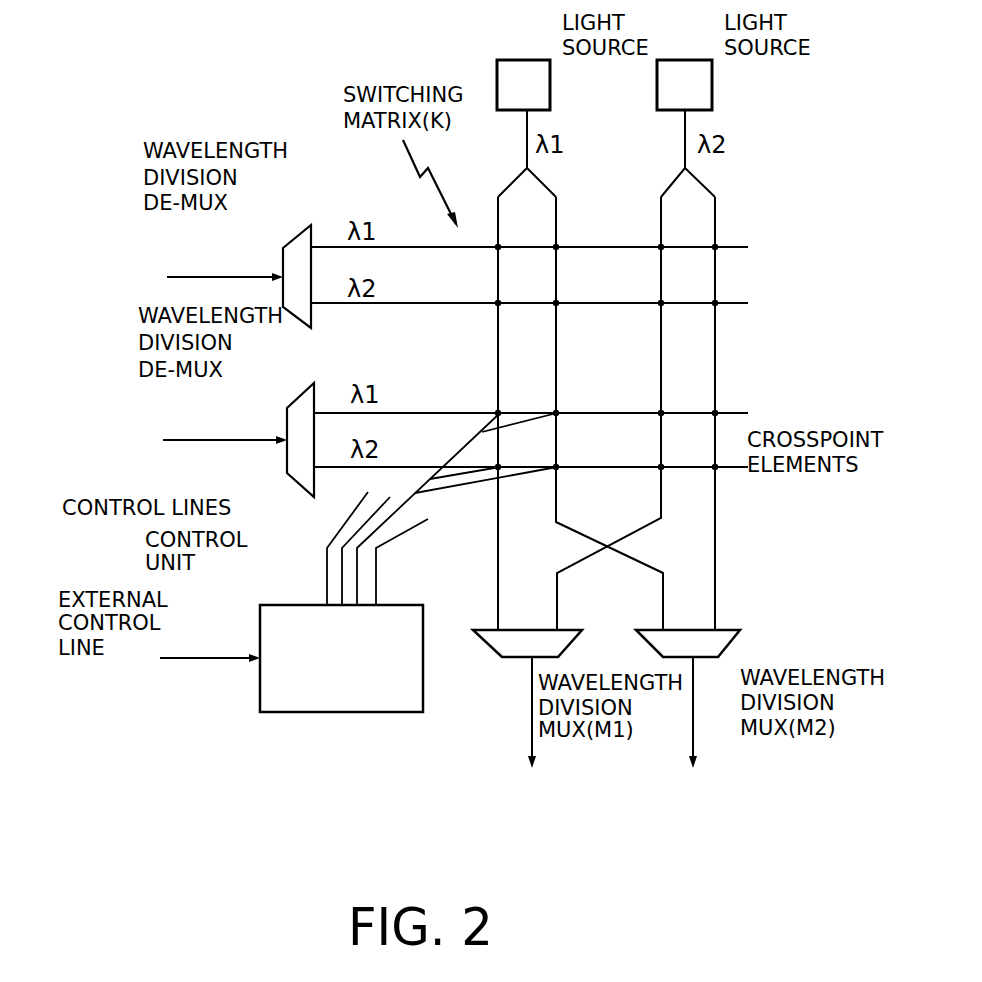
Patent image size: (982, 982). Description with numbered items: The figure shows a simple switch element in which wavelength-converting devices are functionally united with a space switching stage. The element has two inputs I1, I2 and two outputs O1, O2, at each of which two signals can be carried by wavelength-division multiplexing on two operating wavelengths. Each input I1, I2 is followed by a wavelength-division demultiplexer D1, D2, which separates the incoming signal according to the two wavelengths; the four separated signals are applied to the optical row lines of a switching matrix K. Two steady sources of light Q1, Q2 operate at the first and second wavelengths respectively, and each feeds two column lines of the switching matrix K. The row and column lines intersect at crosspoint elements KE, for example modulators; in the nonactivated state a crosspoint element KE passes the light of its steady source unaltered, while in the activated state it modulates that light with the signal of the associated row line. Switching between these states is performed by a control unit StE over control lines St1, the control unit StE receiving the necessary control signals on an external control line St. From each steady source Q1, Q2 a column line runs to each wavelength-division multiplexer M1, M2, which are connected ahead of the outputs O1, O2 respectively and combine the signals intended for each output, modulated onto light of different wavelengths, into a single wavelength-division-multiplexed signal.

The steady source of light Q1 is at (535, 92).
The steady source of light Q2 is at (695, 86).
The switching matrix K is at (618, 378).
The crosspoint elements KE is at (717, 416).
The wavelength-division demultiplexer D1 is at (297, 246).
The wavelength-division demultiplexer D2 is at (298, 410).
The input I1 is at (205, 277).
The input I2 is at (206, 442).
The control lines St1 is at (367, 537).
The control unit StE is at (273, 605).
The external control line St is at (191, 665).
The wavelength-division multiplexer M1 is at (563, 672).
The wavelength-division multiplexer M2 is at (741, 668).
The output O1 is at (539, 734).
The output O2 is at (700, 734).